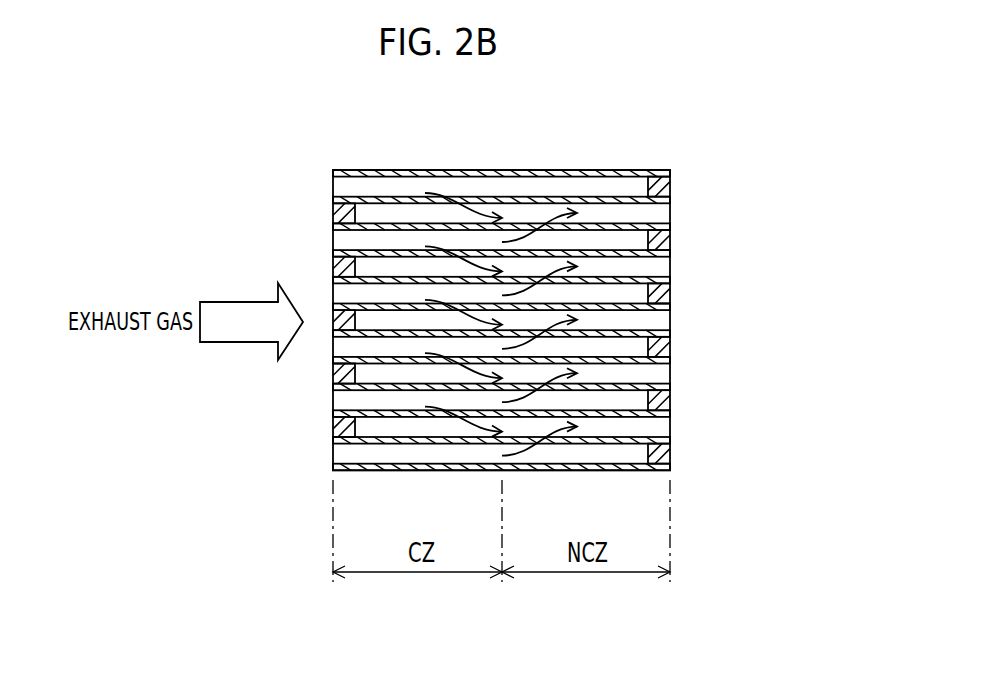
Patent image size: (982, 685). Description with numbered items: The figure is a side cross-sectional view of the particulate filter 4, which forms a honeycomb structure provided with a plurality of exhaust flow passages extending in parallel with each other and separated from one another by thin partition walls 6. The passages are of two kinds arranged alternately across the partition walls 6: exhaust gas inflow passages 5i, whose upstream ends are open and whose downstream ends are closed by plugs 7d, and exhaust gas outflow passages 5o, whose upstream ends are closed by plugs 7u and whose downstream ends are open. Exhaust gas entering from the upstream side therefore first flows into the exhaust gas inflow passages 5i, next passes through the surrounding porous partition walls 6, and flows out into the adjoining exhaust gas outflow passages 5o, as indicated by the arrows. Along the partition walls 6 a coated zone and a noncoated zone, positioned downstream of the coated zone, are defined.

The particulate filter 4 is at (590, 129).
The exhaust gas outflow passages 5o is at (387, 268).
The exhaust gas inflow passages 5i is at (410, 402).
The partition walls 6 is at (498, 200).
The plugs 7u is at (333, 262).
The plugs 7d is at (669, 238).